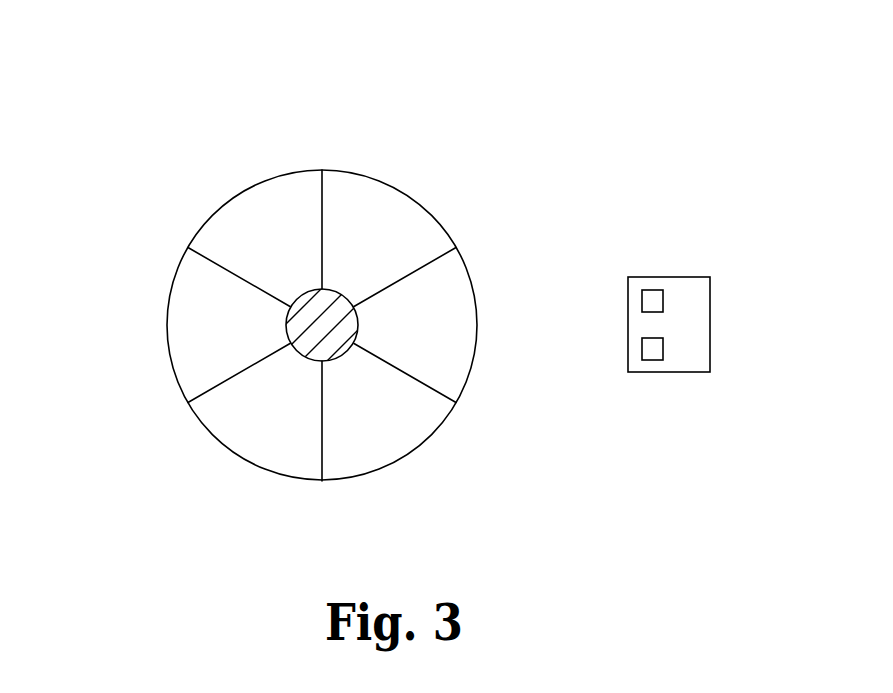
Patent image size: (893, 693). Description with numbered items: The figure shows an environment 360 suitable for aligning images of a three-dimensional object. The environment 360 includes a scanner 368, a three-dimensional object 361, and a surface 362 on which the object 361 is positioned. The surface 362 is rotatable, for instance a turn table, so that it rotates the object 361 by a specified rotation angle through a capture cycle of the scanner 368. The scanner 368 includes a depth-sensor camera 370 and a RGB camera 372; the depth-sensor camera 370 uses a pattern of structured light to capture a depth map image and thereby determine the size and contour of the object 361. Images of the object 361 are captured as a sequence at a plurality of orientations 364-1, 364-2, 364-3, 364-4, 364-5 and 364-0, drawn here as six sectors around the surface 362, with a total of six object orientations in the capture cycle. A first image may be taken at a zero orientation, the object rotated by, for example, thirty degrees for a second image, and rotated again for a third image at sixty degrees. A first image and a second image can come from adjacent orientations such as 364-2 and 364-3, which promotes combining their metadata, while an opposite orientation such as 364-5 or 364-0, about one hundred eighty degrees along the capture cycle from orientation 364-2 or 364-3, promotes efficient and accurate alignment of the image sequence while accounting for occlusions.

The environment 360 is at (116, 131).
The 3D object 361 is at (327, 302).
The surface 362 is at (161, 271).
The orientation 364-0 is at (185, 337).
The orientation 364-1 is at (265, 212).
The orientation 364-2 is at (387, 210).
The orientation 364-3 is at (452, 320).
The orientation 364-4 is at (400, 440).
The orientation 364-5 is at (265, 440).
The scanner 368 is at (670, 381).
The depth-sensor camera 370 is at (663, 297).
The RGB camera 372 is at (663, 345).